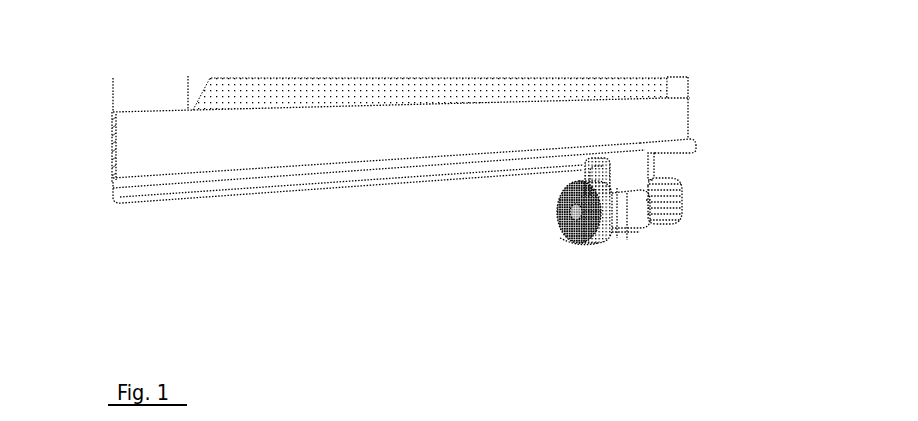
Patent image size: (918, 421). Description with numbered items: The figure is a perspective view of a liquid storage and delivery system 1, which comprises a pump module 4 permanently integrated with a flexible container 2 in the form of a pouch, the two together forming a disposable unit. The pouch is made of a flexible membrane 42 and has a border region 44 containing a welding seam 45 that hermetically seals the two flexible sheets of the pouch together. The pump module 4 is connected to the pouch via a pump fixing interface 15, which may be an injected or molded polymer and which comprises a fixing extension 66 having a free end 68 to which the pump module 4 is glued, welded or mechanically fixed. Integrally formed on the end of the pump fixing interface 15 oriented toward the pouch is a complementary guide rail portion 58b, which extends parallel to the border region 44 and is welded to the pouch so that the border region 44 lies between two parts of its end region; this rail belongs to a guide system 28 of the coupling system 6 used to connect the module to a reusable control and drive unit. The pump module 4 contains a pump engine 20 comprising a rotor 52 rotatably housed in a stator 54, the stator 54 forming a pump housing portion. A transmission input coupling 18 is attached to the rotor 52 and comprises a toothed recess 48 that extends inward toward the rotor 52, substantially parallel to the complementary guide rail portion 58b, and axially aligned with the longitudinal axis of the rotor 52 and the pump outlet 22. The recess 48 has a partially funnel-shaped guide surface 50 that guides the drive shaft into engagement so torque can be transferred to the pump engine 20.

The liquid storage and delivery system 1 is at (822, 86).
The flexible container 2 is at (704, 80).
The pump module 4 is at (634, 263).
The coupling system 6 is at (320, 197).
The pump fixing interface 15 is at (638, 165).
The transmission input coupling 18 is at (554, 223).
The pump engine 20 is at (601, 249).
The pump outlet 22 is at (688, 203).
The guide system 28 is at (465, 168).
The flexible membrane 42 is at (227, 85).
The border region 44 is at (112, 167).
The seam 45 is at (137, 96).
The recess 48 is at (573, 220).
The guide surface 50 is at (573, 213).
The rotor 52 is at (587, 235).
The stator 54 is at (638, 212).
The complementary guide rail portion 58b is at (183, 191).
The fixing extension 66 is at (643, 178).
The free end 68 is at (626, 194).